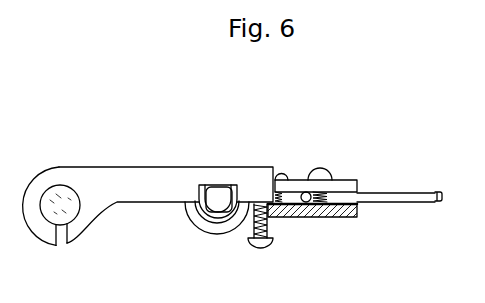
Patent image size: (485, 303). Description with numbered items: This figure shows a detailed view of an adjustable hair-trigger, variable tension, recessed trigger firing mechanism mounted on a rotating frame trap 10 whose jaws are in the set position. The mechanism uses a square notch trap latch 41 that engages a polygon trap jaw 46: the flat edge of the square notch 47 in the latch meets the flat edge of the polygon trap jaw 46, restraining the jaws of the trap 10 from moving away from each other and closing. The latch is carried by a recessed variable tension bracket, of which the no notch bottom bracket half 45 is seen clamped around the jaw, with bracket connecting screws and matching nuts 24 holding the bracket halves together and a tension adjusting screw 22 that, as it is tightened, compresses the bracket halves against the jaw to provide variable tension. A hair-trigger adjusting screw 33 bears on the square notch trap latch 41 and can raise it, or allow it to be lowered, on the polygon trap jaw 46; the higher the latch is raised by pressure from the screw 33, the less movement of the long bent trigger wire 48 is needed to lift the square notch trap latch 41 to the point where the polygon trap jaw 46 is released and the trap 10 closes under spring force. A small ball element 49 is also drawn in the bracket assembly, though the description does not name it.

The trap 10 is at (72, 188).
The square notch trap latch 41 is at (53, 167).
The polygon trap jaw 46 is at (203, 182).
The square notch 47 is at (230, 187).
The no notch bottom bracket half 45 is at (202, 237).
The hair-trigger adjusting screw 33 is at (270, 243).
The tension adjusting screw 22 is at (285, 178).
The bracket connecting screws with matching nuts 24 is at (318, 170).
The detent ball 49 is at (288, 188).
The long bent trigger wire 48 is at (402, 192).